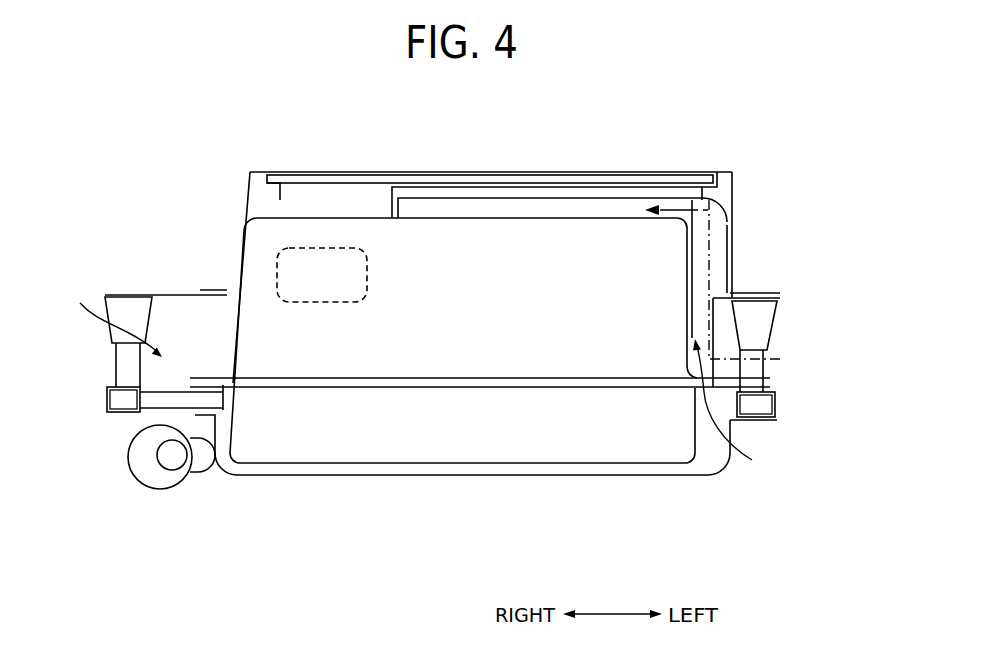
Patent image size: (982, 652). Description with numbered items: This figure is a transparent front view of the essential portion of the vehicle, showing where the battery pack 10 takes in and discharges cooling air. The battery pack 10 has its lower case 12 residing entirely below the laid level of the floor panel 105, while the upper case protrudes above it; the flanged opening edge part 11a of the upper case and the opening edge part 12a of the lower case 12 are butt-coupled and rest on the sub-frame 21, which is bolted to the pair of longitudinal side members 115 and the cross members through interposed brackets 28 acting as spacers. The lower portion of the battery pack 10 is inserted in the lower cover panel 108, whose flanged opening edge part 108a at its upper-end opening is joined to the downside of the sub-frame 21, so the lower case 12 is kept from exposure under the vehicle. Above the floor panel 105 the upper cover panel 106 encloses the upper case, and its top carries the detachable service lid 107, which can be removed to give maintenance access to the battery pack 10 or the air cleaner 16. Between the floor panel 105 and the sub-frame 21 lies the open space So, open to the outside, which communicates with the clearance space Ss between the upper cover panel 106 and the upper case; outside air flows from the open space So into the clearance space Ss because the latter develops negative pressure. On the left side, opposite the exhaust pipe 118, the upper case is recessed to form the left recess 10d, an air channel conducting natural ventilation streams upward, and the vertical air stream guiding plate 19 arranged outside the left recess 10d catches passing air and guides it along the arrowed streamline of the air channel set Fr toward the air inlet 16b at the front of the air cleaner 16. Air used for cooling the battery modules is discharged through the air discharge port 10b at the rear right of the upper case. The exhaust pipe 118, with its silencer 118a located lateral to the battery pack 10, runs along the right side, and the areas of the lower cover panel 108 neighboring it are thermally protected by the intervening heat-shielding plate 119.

The battery pack 10 is at (527, 313).
The air discharge port 10b is at (310, 258).
The left recess 10d is at (745, 408).
The opening edge part of the upper case 11a is at (207, 377).
The lower case 12 is at (512, 465).
The opening edge part of the lower case 12a is at (190, 408).
The air cleaner 16 is at (383, 197).
The air inlet 16b is at (530, 207).
The air stream guiding plate 19 is at (722, 228).
The sub-frame 21 is at (106, 400).
The bracket 28 is at (118, 365).
The floor panel 105 is at (122, 293).
The upper cover panel 106 is at (237, 227).
The service lid 107 is at (353, 172).
The lower cover panel 108 is at (670, 477).
The flanged opening edge part of the lower cover panel 108a is at (760, 422).
The side member 115 is at (766, 325).
The exhaust pipe 118 is at (200, 465).
The silencer 118a is at (138, 473).
The heat-shielding plate 119 is at (225, 478).
The clearance space Ss is at (223, 313).
The open space So is at (111, 319).
The air channel set Fr is at (710, 265).